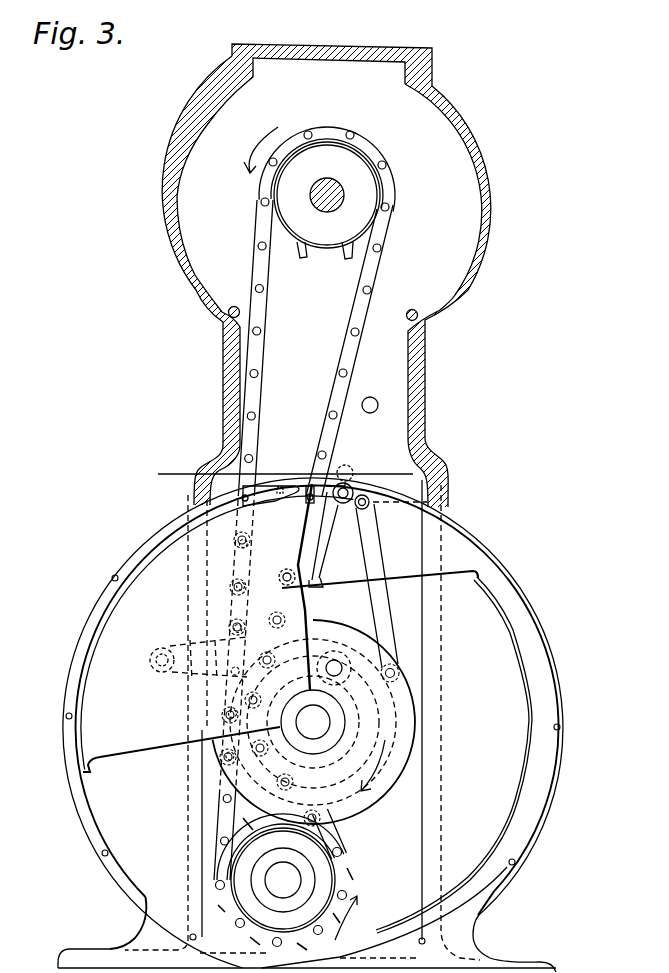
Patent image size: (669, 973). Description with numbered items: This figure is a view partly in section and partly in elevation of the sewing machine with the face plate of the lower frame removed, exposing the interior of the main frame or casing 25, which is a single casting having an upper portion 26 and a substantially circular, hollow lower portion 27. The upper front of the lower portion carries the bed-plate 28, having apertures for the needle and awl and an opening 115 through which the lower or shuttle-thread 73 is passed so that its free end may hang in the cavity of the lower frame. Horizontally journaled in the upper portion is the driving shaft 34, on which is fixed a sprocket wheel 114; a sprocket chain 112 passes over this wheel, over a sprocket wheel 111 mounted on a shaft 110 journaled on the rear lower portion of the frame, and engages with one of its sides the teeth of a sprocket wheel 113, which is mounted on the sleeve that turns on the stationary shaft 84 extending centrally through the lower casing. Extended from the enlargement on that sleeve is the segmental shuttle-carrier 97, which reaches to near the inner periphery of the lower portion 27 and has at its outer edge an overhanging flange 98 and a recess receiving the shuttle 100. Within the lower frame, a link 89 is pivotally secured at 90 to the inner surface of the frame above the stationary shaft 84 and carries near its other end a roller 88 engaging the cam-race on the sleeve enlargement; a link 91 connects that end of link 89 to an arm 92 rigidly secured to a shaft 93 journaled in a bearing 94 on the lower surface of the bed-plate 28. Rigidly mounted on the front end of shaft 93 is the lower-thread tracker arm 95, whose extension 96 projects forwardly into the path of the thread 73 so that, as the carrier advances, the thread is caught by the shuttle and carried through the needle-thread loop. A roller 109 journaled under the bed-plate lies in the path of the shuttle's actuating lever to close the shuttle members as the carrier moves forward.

The main frame or casing 25 is at (424, 406).
The upper portion of the frame 26 is at (338, 54).
The lower portion of the frame 27 is at (565, 712).
The bed-plate 28 is at (332, 473).
The shaft 34 is at (331, 212).
The lower or shuttle-thread 73 is at (180, 474).
The stationary shaft 84 is at (313, 722).
The roller 88 is at (343, 660).
The link 89 is at (235, 627).
The pivot 90 is at (153, 665).
The link 91 is at (387, 605).
The arm 92 is at (344, 505).
The shaft 93 is at (352, 473).
The bearing 94 is at (368, 482).
The lower-thread tracker arm 95 is at (325, 560).
The extension 96 is at (284, 586).
The shuttle-carrier 97 is at (317, 726).
The overhanging flange 98 is at (85, 735).
The shuttle 100 is at (272, 500).
The roller 109 is at (250, 473).
The shaft 110 is at (283, 880).
The sprocket wheel 111 is at (285, 884).
The sprocket chain 112 is at (353, 322).
The sprocket wheel 113 is at (385, 734).
The sprocket wheel 114 is at (367, 173).
The opening 115 is at (313, 480).